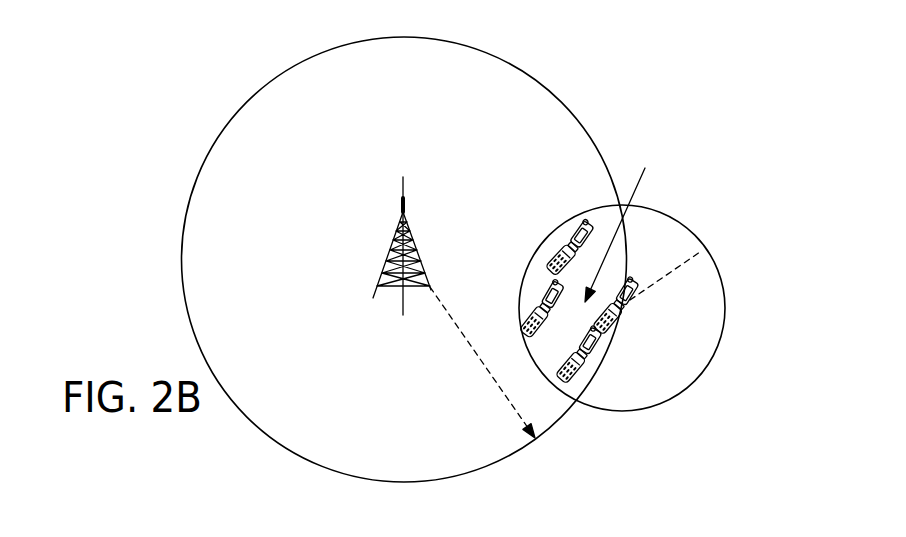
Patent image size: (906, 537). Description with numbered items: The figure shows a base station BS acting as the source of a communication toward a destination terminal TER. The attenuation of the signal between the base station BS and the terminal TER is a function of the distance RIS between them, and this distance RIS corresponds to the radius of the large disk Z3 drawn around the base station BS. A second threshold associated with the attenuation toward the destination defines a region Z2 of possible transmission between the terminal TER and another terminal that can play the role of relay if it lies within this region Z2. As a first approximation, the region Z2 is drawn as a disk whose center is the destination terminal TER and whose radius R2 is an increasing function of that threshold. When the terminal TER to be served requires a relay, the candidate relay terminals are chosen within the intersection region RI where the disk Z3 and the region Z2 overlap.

The disk Z3 is at (295, 98).
The region of possible transmission Z2 is at (698, 340).
The base station BS is at (403, 245).
The terminal TER is at (623, 342).
The intersection region RI is at (620, 222).
The radius R2 is at (700, 252).
The distance RIS is at (493, 382).